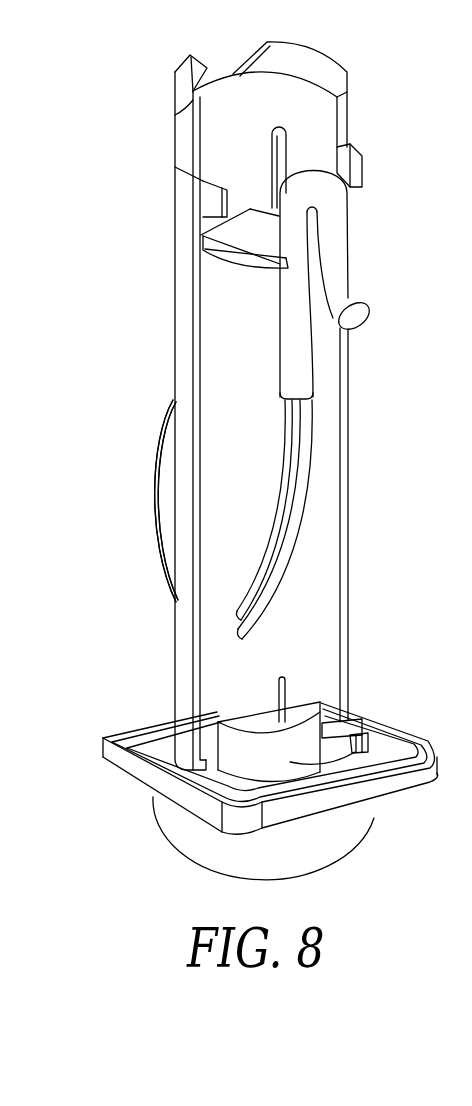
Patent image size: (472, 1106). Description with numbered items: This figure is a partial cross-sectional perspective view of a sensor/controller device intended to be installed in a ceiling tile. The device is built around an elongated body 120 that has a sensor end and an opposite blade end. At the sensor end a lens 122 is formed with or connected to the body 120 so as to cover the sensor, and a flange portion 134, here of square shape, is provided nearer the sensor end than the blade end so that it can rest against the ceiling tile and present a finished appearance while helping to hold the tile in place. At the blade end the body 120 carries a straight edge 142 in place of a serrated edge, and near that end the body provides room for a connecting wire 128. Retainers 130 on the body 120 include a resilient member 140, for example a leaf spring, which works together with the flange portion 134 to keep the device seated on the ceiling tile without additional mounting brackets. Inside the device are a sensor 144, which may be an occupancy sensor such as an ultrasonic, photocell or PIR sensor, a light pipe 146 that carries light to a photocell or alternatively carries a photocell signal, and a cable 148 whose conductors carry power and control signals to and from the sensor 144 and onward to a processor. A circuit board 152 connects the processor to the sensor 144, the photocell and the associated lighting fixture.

The body 120 is at (183, 357).
The lens 122 is at (200, 862).
The connecting wire 128 is at (355, 317).
The retainers 130 is at (163, 502).
The flange portion 134 is at (153, 780).
The resilient member 140 is at (163, 502).
The straight edge 142 is at (310, 47).
The sensor 144 is at (297, 762).
The light pipe 146 is at (298, 527).
The cable 148 is at (290, 503).
The circuit board 152 is at (212, 307).